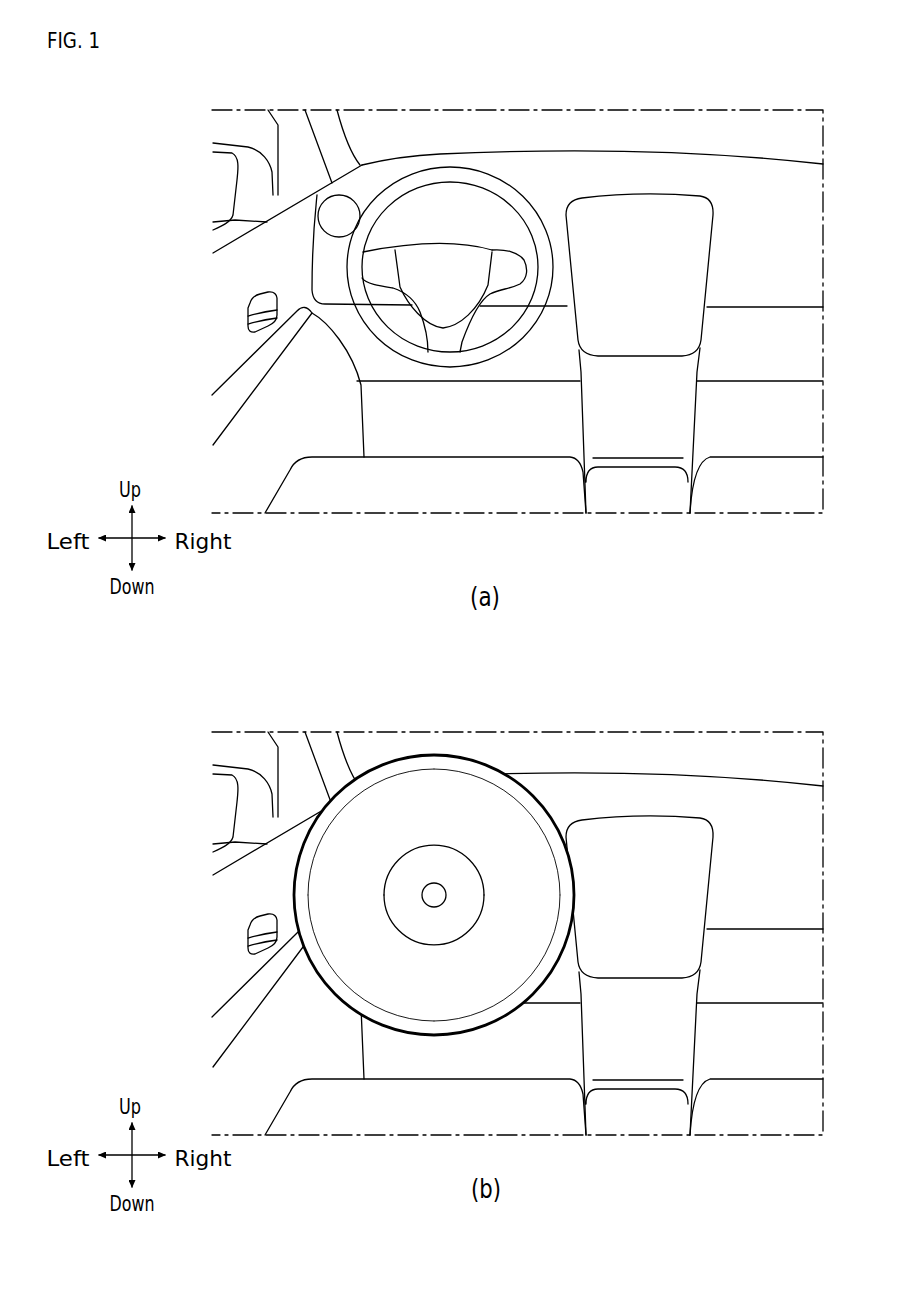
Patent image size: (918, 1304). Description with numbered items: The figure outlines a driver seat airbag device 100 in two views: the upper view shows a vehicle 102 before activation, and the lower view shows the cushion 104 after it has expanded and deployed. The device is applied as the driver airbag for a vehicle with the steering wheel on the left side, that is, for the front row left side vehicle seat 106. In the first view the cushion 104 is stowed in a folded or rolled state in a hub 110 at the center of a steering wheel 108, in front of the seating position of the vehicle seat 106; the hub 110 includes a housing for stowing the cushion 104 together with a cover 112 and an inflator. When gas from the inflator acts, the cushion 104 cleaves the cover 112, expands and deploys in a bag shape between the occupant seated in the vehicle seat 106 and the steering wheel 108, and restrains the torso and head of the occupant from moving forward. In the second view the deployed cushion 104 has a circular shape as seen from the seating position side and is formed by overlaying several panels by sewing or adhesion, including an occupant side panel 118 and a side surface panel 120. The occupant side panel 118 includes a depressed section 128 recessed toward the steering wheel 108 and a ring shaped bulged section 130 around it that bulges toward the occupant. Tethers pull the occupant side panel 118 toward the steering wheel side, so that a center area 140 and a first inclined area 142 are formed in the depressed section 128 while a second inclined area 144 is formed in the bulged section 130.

The driver seat airbag device 100 is at (443, 234).
The vehicle 102 is at (427, 494).
The cushion 104 is at (441, 757).
The front row left side vehicle seat 106 is at (348, 493).
The steering wheel 108 is at (460, 167).
The hub 110 is at (467, 243).
The cover 112 is at (422, 260).
The occupant side panel 118 is at (358, 970).
The side surface panel 120 is at (408, 767).
The depressed section 128 is at (437, 867).
The bulged section 130 is at (494, 816).
The center area 140 is at (424, 893).
The first inclined area 142 is at (455, 940).
The second inclined area 144 is at (490, 987).